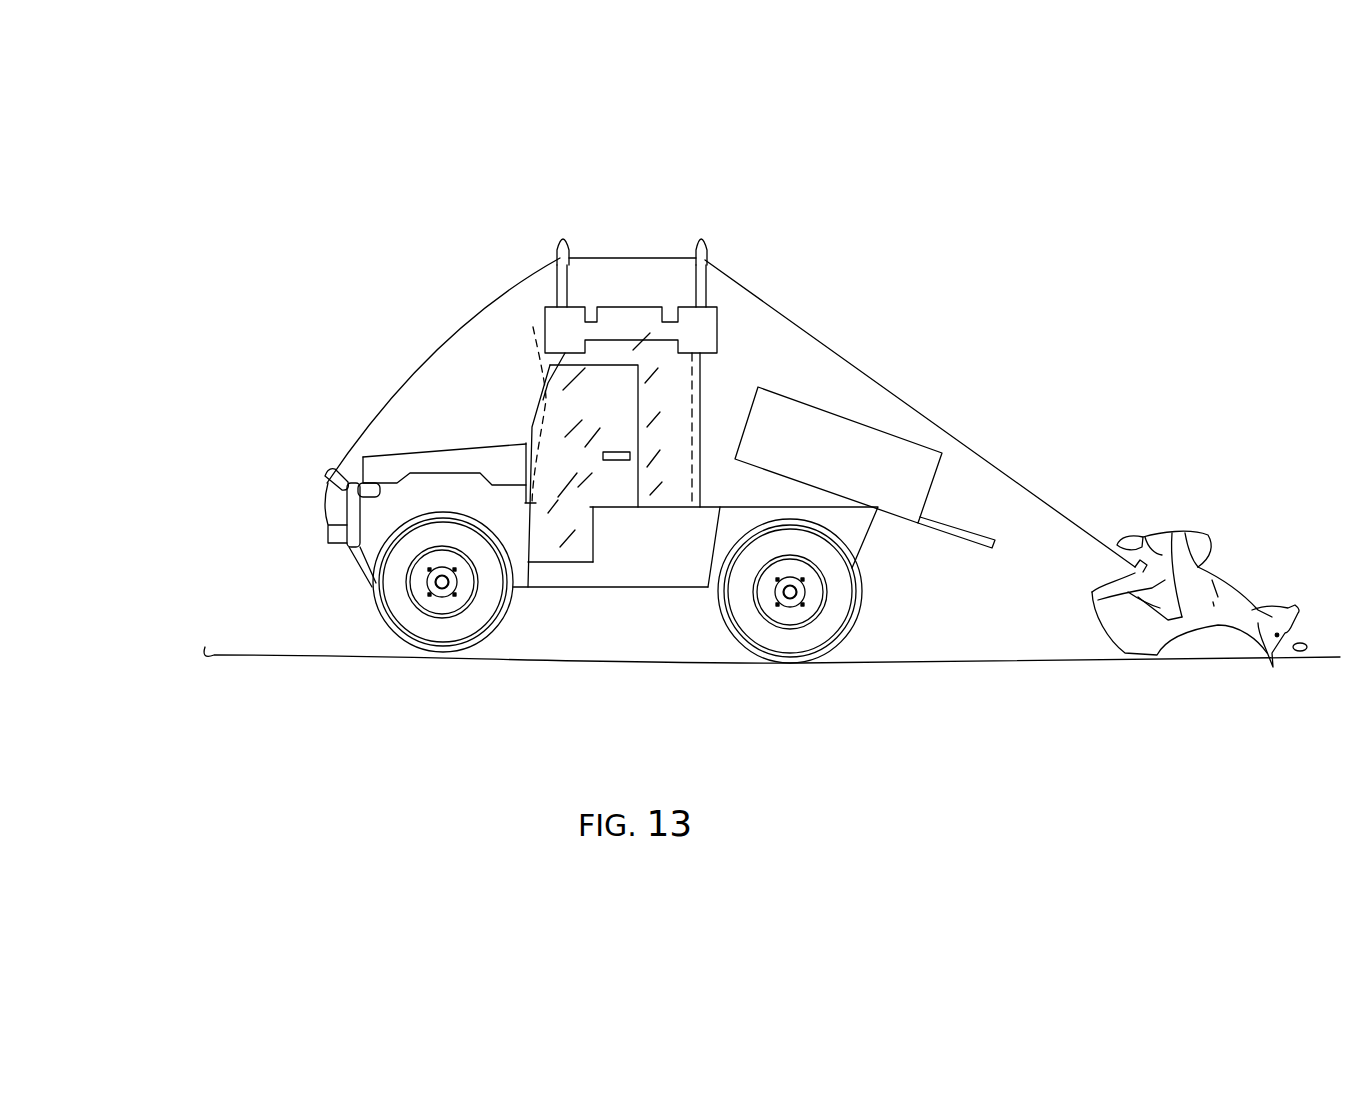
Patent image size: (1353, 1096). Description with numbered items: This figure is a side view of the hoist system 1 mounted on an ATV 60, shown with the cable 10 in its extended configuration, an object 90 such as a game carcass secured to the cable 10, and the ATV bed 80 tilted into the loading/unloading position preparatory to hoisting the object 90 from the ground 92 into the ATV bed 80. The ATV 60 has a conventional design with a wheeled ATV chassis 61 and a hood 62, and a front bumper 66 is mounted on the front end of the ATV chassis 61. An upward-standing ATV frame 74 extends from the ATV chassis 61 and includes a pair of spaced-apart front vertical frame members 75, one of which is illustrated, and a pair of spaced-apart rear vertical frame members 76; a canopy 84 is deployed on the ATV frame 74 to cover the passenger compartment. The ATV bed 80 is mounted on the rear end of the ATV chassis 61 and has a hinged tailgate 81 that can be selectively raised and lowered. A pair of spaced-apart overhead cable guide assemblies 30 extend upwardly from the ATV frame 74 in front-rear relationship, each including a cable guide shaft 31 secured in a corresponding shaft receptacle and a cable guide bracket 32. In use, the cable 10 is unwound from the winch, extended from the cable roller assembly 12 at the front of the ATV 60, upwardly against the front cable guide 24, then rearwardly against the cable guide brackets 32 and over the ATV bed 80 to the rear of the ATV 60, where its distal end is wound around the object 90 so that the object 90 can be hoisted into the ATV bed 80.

The hoist system 1 is at (380, 288).
The cable 10 is at (797, 327).
The cable roller assembly 12 is at (328, 553).
The front cable guide 24 is at (318, 468).
The overhead cable guide assembly 30 is at (634, 228).
The cable guide shaft 31 is at (695, 270).
The cable guide bracket 32 is at (549, 245).
The ATV 60 is at (647, 594).
The ATV chassis 61 is at (672, 575).
The hood 62 is at (482, 405).
The front bumper 66 is at (337, 505).
The ATV frame 74 is at (529, 393).
The front vertical frame member 75 is at (519, 404).
The rear vertical frame member 76 is at (703, 395).
The ATV bed 80 is at (847, 438).
The tailgate 81 is at (973, 553).
The canopy 84 is at (630, 357).
The object 90 is at (1245, 602).
The ground 92 is at (995, 657).